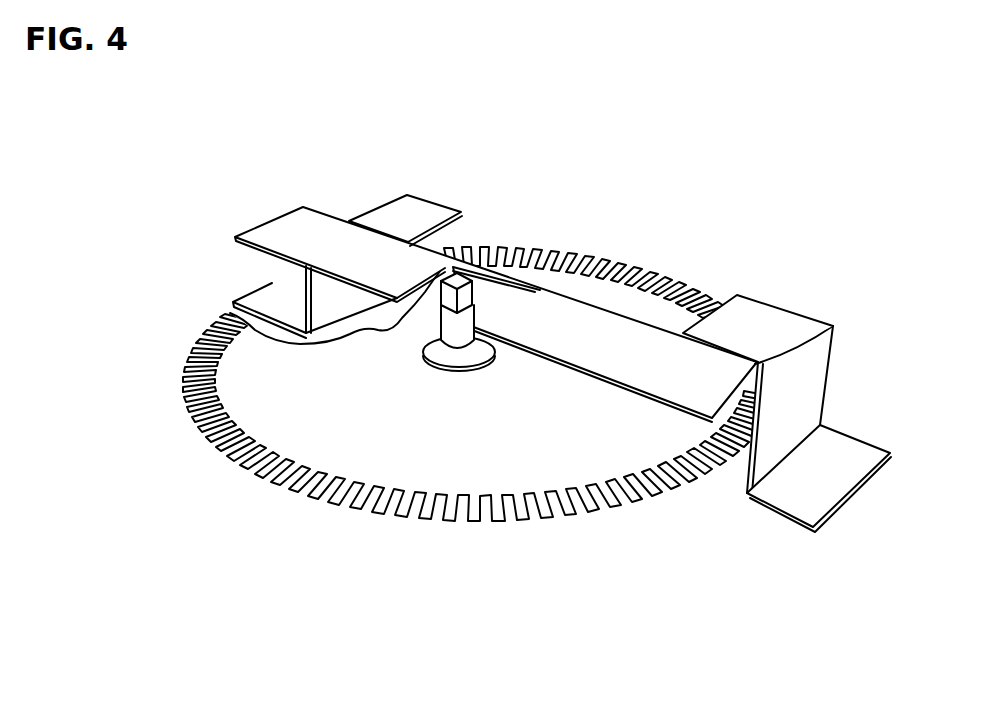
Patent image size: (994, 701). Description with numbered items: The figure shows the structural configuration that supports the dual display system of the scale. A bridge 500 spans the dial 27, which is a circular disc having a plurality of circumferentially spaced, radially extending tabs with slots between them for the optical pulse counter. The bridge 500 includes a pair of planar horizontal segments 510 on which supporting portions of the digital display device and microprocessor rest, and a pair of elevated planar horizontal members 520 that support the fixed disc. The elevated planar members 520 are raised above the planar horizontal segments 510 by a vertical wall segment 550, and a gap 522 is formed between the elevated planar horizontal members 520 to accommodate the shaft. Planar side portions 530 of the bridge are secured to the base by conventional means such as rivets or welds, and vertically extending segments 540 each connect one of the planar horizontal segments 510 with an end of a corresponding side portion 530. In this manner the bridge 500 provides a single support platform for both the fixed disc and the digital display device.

The dial 27 is at (426, 545).
The bridge 500 is at (519, 372).
The planar horizontal segments 510 is at (417, 212).
The elevated planar horizontal members 520 is at (415, 267).
The gap 522 is at (427, 312).
The planar side portions 530 is at (277, 304).
The vertically extending segments 540 is at (305, 285).
The vertical wall segment 550 is at (327, 217).